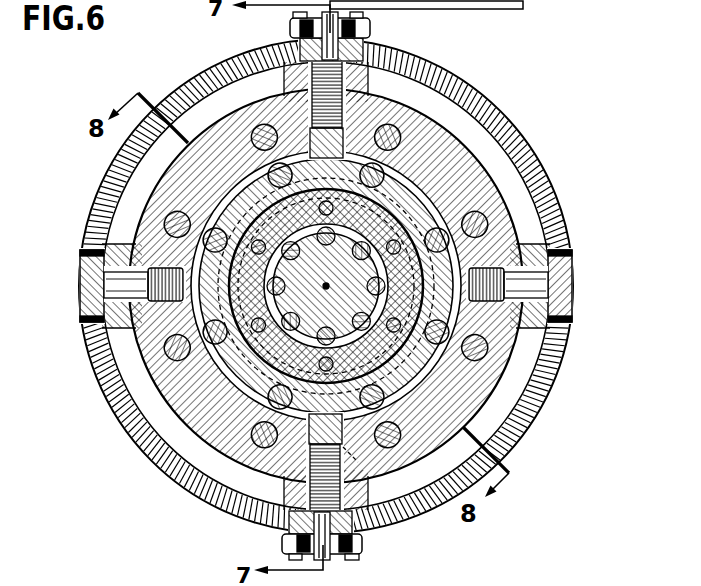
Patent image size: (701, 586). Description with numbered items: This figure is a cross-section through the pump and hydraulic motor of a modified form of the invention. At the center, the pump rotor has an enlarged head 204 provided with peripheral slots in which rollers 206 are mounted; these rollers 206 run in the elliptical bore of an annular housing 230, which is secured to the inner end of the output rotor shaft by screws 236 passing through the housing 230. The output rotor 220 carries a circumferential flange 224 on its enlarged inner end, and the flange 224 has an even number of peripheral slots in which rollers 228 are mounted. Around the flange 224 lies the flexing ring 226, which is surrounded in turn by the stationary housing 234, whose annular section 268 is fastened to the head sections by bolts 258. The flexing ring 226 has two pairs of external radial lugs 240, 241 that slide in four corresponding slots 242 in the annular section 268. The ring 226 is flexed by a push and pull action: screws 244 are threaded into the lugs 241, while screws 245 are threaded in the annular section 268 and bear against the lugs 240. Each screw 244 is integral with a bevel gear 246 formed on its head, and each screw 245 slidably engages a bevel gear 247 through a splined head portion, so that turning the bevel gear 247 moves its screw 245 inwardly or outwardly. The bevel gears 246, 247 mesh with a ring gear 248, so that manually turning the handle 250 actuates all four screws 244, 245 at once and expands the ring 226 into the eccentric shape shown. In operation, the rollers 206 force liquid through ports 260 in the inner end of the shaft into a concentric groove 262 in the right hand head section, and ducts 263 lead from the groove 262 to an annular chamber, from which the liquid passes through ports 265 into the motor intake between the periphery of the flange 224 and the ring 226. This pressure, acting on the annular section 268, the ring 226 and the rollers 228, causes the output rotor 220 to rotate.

The enlarged head 204 is at (497, 205).
The rollers 206 is at (530, 252).
The output rotor 220 is at (143, 223).
The circumferential flange 224 is at (160, 193).
The flexing ring 226 is at (210, 147).
The rollers 228 is at (147, 350).
The annular housing 230 is at (507, 243).
The stationary housing 234 is at (486, 215).
The screws 236 is at (205, 198).
The external radial lugs 240 is at (305, 158).
The external radial lugs 241 is at (155, 262).
The slots 242 is at (370, 83).
The screws 244 is at (83, 257).
The screws 245 is at (313, 88).
The bevel gear 246 is at (93, 283).
The bevel gear 247 is at (373, 40).
The ring gear 248 is at (463, 93).
The handle 250 is at (523, 10).
The bolts 258 is at (157, 365).
The ports 260 is at (355, 470).
The concentric groove 262 is at (185, 397).
The ducts 263 is at (180, 378).
The ports 265 is at (421, 150).
The annular section 268 is at (497, 172).